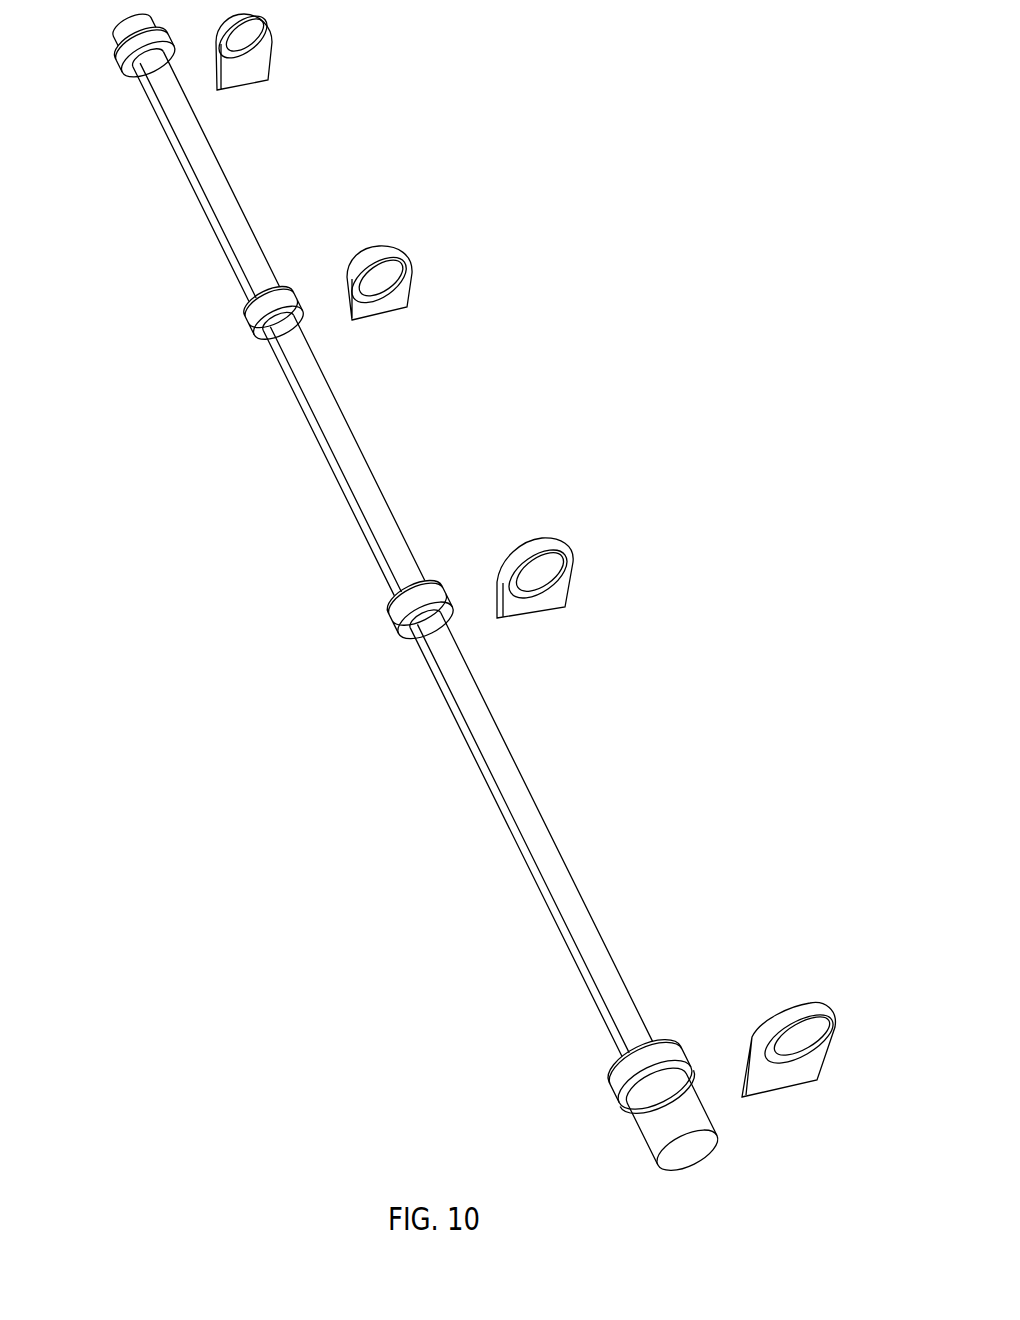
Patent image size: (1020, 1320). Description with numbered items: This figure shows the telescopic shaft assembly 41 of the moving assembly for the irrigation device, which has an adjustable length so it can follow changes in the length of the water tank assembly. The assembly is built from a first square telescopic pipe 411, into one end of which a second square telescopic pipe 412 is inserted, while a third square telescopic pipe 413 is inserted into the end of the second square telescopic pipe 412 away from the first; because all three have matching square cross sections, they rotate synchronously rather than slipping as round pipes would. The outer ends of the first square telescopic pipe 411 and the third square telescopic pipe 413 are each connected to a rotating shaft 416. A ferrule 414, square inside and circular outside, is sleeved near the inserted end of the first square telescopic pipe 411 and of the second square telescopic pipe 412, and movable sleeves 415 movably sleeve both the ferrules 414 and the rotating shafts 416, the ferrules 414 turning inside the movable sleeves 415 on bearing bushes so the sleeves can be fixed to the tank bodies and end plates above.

The telescopic shaft assembly 41 is at (438, 593).
The first square telescopic pipe 411 is at (192, 197).
The second square telescopic pipe 412 is at (332, 470).
The third square telescopic pipe 413 is at (502, 797).
The ferrule 414 is at (247, 310).
The movable sleeve 415 is at (567, 588).
The rotating shaft 416 is at (675, 1123).